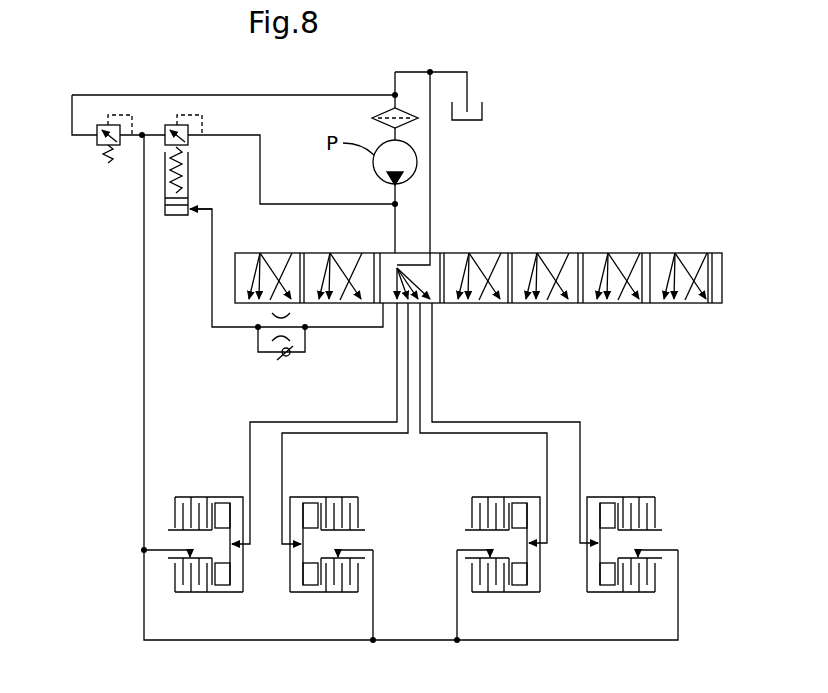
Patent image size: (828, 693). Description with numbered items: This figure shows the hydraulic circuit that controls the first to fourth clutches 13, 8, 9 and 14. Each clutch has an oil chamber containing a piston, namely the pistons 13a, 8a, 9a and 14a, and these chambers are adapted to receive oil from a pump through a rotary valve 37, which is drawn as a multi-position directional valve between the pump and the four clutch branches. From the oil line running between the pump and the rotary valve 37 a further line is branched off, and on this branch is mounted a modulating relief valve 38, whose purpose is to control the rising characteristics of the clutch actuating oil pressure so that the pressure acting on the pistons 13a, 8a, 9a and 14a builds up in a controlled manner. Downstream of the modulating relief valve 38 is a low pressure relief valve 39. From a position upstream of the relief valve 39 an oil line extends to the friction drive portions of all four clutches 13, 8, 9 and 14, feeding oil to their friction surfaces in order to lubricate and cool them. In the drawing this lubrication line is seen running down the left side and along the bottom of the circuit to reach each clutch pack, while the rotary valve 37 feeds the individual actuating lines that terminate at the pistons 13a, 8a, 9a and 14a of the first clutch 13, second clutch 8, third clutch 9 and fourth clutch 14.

The rotary valve 37 is at (589, 253).
The modulating relief valve 38 is at (188, 148).
The low pressure relief valve 39 is at (97, 147).
The first clutch 13 is at (200, 497).
The piston of first clutch 13a is at (232, 598).
The second clutch 8 is at (318, 497).
The piston of second clutch 8a is at (297, 590).
The third clutch 9 is at (500, 497).
The piston of third clutch 9a is at (527, 582).
The fourth clutch 14 is at (618, 497).
The piston of fourth clutch 14a is at (600, 585).